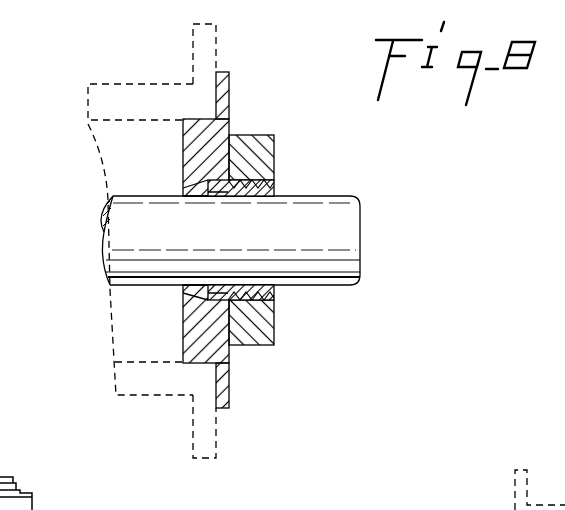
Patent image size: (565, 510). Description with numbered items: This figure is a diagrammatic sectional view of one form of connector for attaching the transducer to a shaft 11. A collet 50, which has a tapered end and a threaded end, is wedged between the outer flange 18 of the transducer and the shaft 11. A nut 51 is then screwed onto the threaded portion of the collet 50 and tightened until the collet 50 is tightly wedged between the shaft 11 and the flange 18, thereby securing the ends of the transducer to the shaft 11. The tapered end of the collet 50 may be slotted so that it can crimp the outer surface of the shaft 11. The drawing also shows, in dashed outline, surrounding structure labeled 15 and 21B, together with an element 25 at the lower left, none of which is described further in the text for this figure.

The shaft 11 is at (320, 283).
The housing frame 15 is at (88, 100).
The outer flange 18 is at (222, 113).
The housing wall portion 21B is at (192, 52).
The mounting element 25 is at (0, 433).
The collet 50 is at (183, 289).
The nut 51 is at (264, 157).